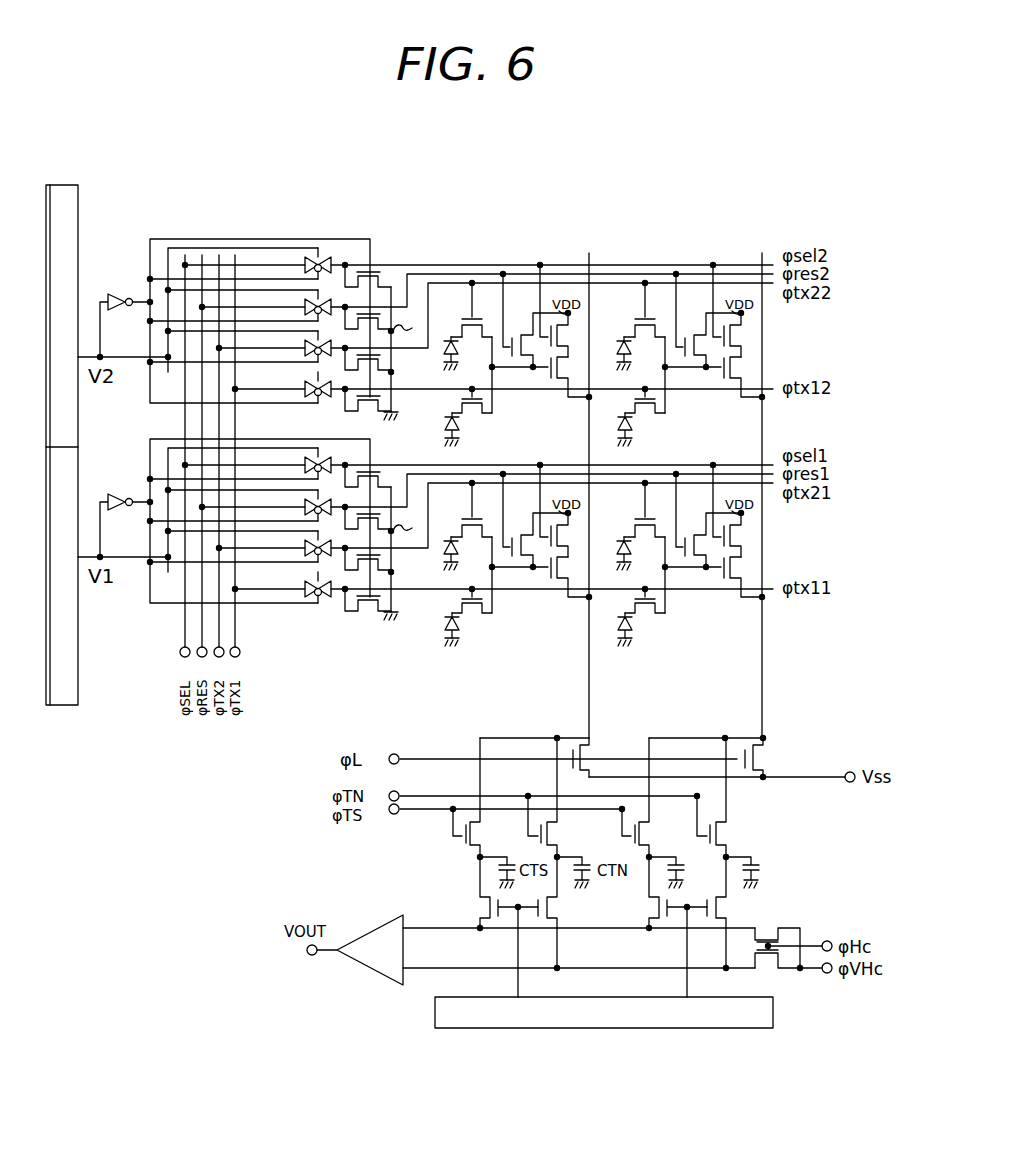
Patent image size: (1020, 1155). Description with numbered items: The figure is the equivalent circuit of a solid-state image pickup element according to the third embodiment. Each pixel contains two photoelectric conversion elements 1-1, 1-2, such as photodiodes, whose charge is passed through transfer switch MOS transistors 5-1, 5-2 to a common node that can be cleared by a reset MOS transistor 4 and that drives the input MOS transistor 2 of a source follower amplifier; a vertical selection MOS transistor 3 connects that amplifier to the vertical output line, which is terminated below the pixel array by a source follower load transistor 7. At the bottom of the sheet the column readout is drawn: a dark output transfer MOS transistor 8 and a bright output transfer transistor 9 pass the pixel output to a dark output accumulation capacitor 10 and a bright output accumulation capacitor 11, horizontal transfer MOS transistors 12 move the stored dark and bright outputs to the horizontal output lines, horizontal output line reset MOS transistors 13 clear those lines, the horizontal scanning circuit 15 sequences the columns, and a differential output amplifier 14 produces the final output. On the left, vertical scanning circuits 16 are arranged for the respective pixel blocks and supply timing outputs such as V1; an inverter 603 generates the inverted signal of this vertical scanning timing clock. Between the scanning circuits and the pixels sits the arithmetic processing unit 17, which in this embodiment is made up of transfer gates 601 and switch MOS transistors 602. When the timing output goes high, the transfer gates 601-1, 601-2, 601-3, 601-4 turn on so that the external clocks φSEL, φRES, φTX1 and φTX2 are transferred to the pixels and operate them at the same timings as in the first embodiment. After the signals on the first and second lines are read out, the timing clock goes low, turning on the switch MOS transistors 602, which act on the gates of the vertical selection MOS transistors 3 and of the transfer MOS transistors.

The photoelectric conversion element 1-1 is at (448, 338).
The photoelectric conversion element 1-2 is at (468, 432).
The input MOS transistor of a source follower amplifier 2 is at (570, 366).
The vertical selection MOS transistor 3 is at (556, 345).
The reset MOS transistor 4 is at (521, 343).
The transfer switch MOS transistor 5-1 is at (465, 313).
The transfer switch MOS transistor 5-2 is at (486, 402).
The source follower load transistor 7 is at (766, 756).
The dark output transfer MOS transistor 8 is at (560, 832).
The bright output transfer transistor 9 is at (453, 842).
The dark output accumulation capacitor 10 is at (590, 878).
The bright output accumulation capacitor 11 is at (492, 868).
The horizontal transfer MOS transistor 12 is at (582, 940).
The horizontal output line reset MOS transistor 13 is at (774, 970).
The differential output amplifier 14 is at (366, 969).
The horizontal scanning circuit 15 is at (728, 1028).
The vertical scanning circuit 16 is at (63, 705).
The arithmetic processing unit 17 is at (395, 648).
The transfer gate 601 is at (322, 257).
The transfer gate 601-1 is at (304, 593).
The transfer gate 601-2 is at (302, 551).
The transfer gate 601-3 is at (307, 499).
The transfer gate 601-4 is at (308, 459).
The switch MOS transistor 602 is at (373, 270).
The inverter 603 is at (112, 291).